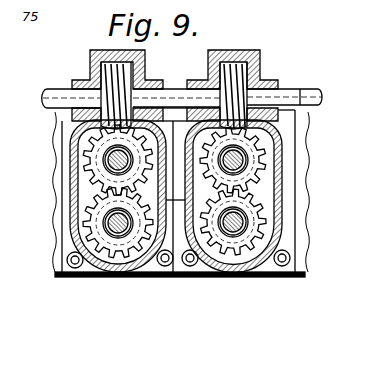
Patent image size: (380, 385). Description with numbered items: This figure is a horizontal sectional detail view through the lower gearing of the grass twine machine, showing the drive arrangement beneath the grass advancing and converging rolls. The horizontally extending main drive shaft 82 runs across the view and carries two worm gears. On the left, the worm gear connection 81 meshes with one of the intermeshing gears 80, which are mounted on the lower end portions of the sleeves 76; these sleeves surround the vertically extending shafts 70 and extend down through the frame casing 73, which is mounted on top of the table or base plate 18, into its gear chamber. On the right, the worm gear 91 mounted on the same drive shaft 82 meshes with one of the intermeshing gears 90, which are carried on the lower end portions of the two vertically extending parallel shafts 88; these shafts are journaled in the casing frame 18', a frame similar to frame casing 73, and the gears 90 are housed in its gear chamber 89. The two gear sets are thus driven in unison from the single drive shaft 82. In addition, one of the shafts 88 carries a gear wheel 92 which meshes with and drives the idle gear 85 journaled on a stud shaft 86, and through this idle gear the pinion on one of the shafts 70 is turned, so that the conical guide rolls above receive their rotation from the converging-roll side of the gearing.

The table or base plate 18 is at (309, 191).
The casing frame 18' is at (199, 192).
The vertically extending shafts 70 is at (105, 168).
The frame casing 73 is at (101, 272).
The sleeve 76 is at (104, 159).
The intermeshing gears 80 is at (78, 190).
The worm gear connection 81 is at (108, 80).
The main drive shaft 82 is at (44, 98).
The idle gear 85 is at (176, 108).
The stud shaft 86 is at (172, 90).
The vertically extending parallel shafts 88 is at (245, 150).
The gear chamber 89 is at (270, 184).
The intermeshing gears 90 is at (248, 162).
The worm gear 91 is at (258, 72).
The gear wheel 92 is at (323, 107).